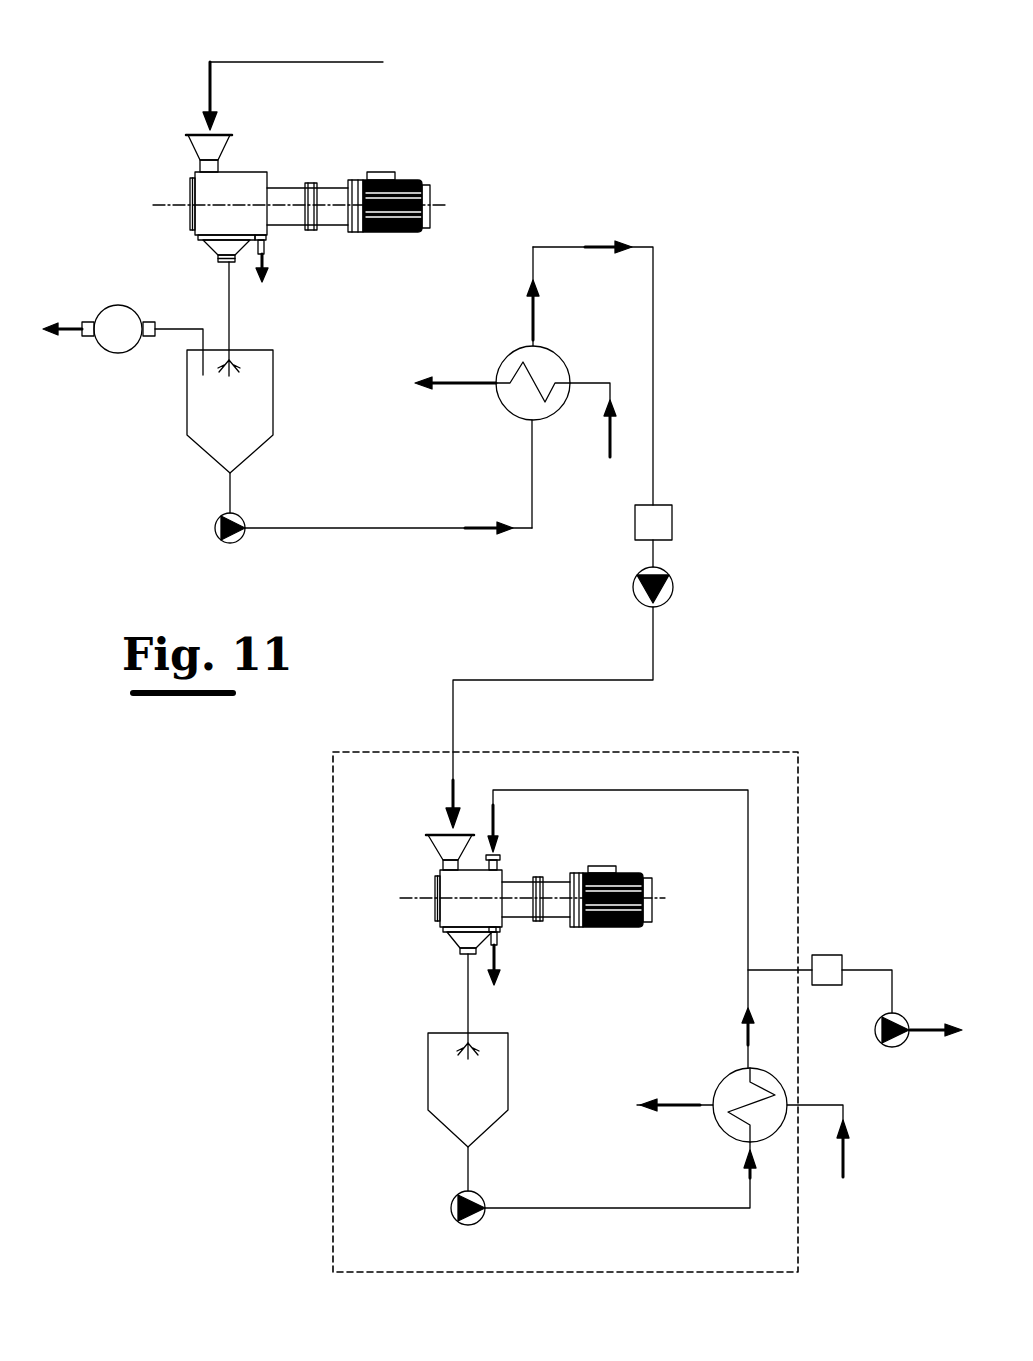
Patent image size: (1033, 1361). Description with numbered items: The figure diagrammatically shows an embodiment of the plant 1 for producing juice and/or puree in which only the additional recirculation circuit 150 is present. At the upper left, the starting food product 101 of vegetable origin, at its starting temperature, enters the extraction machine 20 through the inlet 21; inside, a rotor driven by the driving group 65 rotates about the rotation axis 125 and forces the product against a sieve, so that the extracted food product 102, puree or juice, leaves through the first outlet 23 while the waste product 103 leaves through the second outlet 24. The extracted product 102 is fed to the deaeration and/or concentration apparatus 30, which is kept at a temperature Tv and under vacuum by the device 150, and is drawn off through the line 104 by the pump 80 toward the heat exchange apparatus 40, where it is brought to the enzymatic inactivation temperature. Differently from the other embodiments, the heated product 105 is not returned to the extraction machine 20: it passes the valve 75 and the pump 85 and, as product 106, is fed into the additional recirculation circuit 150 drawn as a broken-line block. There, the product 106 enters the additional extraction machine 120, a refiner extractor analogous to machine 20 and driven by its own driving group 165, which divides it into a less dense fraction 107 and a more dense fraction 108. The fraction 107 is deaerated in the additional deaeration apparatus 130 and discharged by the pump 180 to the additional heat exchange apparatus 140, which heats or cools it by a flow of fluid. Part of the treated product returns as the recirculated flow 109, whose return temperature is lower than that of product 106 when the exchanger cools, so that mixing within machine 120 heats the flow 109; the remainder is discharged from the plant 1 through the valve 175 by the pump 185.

The plant 1 is at (262, 888).
The extraction machine 20 is at (272, 216).
The feed hopper 21 is at (184, 151).
The first outlet 23 is at (206, 257).
The second outlet 24 is at (274, 248).
The deaeration and/or concentration apparatus 30 is at (179, 406).
The heat exchange apparatus 40 is at (484, 355).
The driving group 65 is at (436, 170).
The valve 75 is at (679, 516).
The first pump 80 is at (201, 538).
The pump 85 is at (628, 592).
The starting food product 101 is at (244, 62).
The extracted food product 102 is at (233, 318).
The waste product 103 is at (274, 268).
The tank outlet stream 104 is at (232, 497).
The heated and deaerated and/or concentrated product 105 is at (556, 245).
The heated deaerated and/or concentrated extracted food product 106 is at (532, 672).
The less dense fraction 107 is at (467, 998).
The more dense fraction 108 is at (504, 965).
The recirculated flow of product 109 is at (748, 853).
The additional extraction machine 120 is at (524, 887).
The rotation axis 125 is at (168, 205).
The additional deaeration apparatus 130 is at (421, 1085).
The additional heat exchange apparatus 140 is at (714, 1067).
The additional recirculation circuit 150 is at (97, 361).
The second motor 165 is at (617, 848).
The second filter 175 is at (850, 951).
The pump 180 is at (451, 1225).
The pump 185 is at (901, 1056).